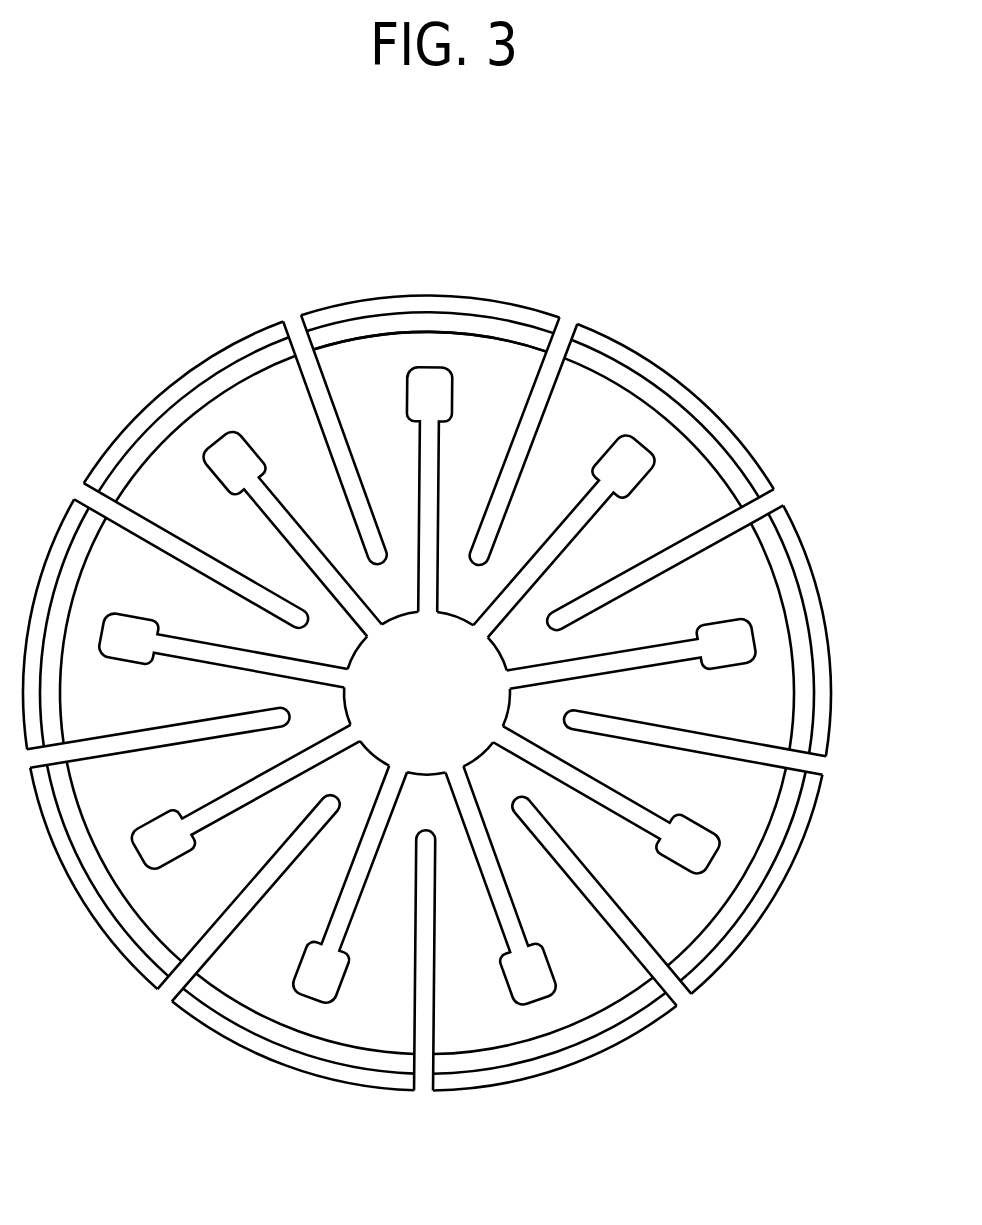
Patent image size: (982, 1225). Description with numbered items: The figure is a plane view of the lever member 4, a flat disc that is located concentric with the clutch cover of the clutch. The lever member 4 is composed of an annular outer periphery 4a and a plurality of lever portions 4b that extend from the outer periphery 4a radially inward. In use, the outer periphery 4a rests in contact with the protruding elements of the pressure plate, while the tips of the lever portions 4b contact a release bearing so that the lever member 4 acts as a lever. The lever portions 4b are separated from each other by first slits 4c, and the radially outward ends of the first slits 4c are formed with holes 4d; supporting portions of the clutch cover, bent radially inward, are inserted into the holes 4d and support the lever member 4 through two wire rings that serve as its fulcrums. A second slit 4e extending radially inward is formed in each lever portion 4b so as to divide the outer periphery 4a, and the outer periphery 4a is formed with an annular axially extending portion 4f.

The lever member 4 is at (634, 275).
The annular outer periphery 4a is at (380, 345).
The lever portions 4b is at (470, 512).
The first slits 4c is at (487, 628).
The holes 4d is at (432, 388).
The second slit 4e is at (293, 833).
The annular axially extending portion 4f is at (732, 907).